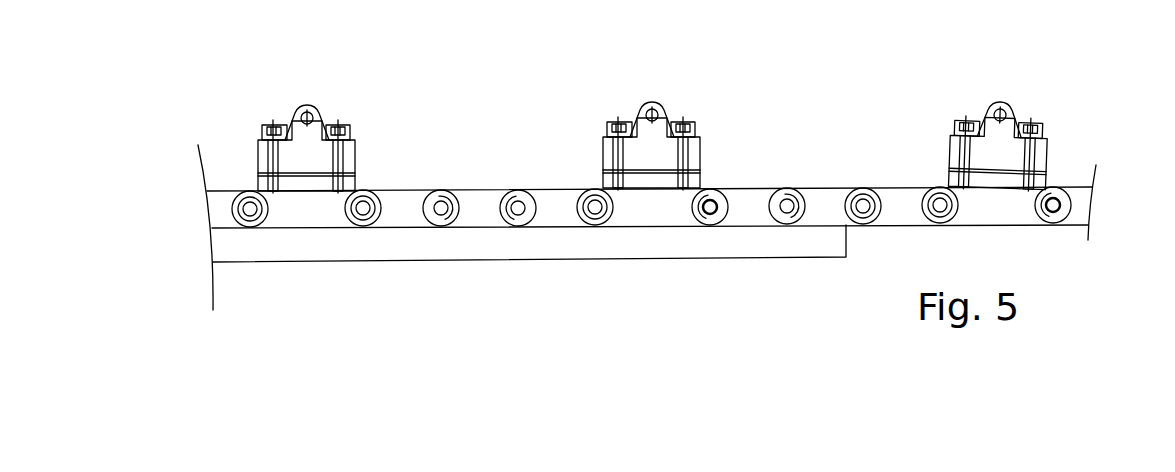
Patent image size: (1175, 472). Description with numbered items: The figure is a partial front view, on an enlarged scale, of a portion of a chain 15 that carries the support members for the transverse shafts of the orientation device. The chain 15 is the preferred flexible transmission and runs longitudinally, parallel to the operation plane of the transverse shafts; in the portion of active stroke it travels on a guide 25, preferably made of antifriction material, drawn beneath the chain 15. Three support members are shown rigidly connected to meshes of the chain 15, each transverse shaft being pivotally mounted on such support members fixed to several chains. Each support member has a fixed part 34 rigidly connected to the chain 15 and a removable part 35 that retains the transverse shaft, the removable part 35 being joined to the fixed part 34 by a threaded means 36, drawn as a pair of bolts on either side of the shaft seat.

The chain 15 is at (818, 210).
The guide 25 is at (373, 250).
The fixed part 34 is at (599, 150).
The removable part 35 is at (642, 78).
The threaded means 36 is at (662, 110).